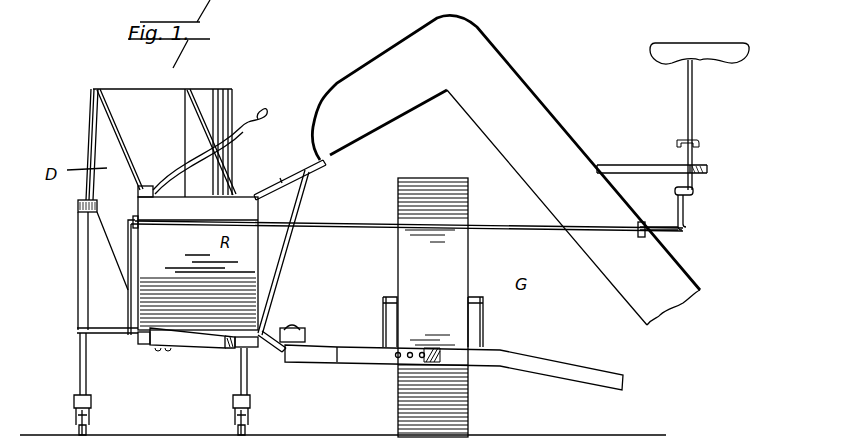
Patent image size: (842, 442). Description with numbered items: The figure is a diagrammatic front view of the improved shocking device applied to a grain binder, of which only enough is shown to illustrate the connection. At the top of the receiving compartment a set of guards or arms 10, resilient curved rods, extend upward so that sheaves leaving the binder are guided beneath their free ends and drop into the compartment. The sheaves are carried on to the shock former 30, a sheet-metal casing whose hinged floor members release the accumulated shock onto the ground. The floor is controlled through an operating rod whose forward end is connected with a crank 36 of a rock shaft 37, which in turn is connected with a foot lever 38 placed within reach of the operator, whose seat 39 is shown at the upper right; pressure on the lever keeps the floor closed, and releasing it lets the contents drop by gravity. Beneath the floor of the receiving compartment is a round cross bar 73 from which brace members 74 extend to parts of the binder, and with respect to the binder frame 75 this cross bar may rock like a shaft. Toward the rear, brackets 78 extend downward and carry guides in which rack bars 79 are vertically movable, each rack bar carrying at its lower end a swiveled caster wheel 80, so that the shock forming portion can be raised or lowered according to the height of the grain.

The guards or arms 10 is at (215, 140).
The shock former 30 is at (212, 93).
The crank 36 is at (128, 250).
The rock shaft 37 is at (375, 229).
The foot lever 38 is at (697, 182).
The seat 39 is at (685, 40).
The cross bar 73 is at (270, 330).
The brace members 74 is at (283, 250).
The frame 75 is at (323, 360).
The brackets 78 is at (78, 295).
The rack bars 79 is at (141, 364).
The caster wheels 80 is at (97, 400).